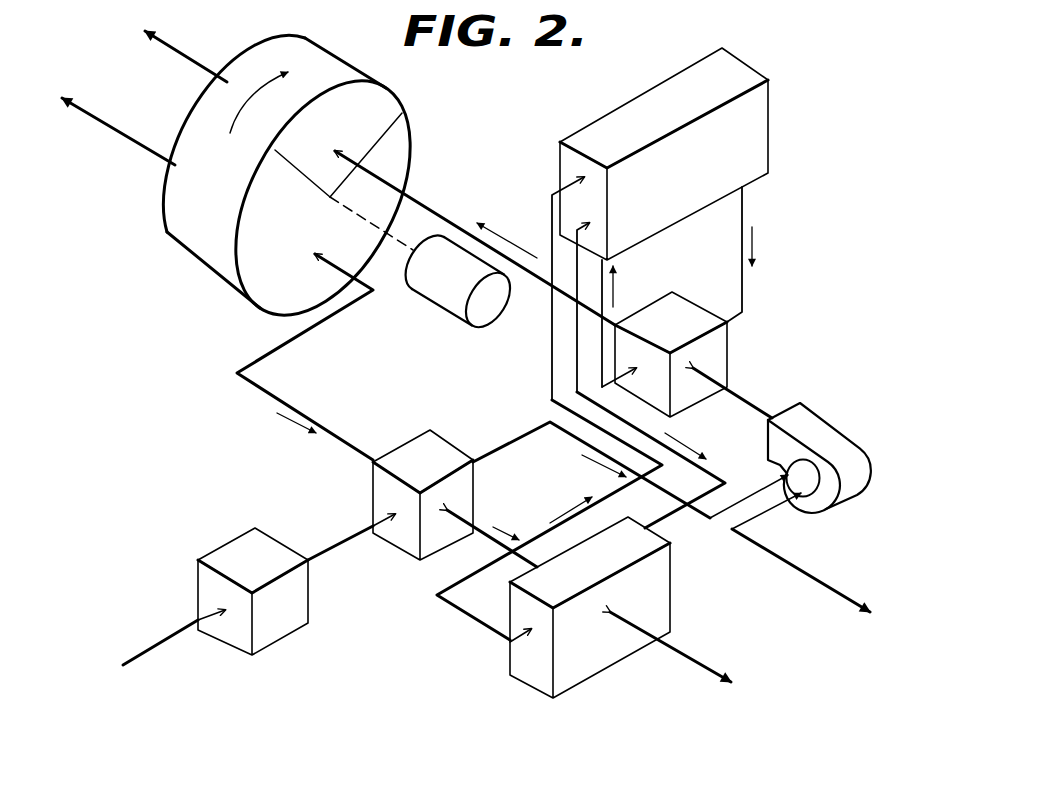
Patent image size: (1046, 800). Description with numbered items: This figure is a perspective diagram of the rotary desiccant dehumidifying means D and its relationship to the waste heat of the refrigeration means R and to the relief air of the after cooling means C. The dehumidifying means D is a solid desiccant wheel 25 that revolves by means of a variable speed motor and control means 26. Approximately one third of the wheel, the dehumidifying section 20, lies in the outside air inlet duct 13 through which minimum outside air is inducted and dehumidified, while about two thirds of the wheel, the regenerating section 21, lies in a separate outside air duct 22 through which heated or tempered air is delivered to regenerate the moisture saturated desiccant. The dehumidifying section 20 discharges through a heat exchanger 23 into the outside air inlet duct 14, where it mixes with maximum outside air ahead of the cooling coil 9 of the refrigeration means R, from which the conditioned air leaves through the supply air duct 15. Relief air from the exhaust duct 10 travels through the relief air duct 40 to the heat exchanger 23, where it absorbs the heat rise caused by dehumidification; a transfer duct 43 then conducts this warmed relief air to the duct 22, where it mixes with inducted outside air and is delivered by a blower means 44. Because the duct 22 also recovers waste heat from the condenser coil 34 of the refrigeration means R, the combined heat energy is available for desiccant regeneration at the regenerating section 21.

The cooling coil 9 is at (660, 590).
The exhaust duct 10 is at (173, 628).
The outside air inlet duct 13 is at (180, 55).
The outside air inlet duct 14 is at (125, 138).
The supply air duct 15 is at (685, 660).
The dehumidifying section 20 is at (299, 225).
The regenerating section 21 is at (354, 150).
The outside air duct 22 is at (438, 203).
The heat exchanger 23 is at (410, 446).
The desiccant wheel 25 is at (165, 236).
The variable speed motor and control means 26 is at (440, 298).
The condenser coil 34 is at (714, 350).
The relief air duct 40 is at (335, 548).
The transfer duct 43 is at (517, 440).
The blower means 44 is at (832, 433).
The dehumidifying means D is at (290, 247).
The refrigeration means R is at (734, 147).
The after cooling means C is at (338, 483).